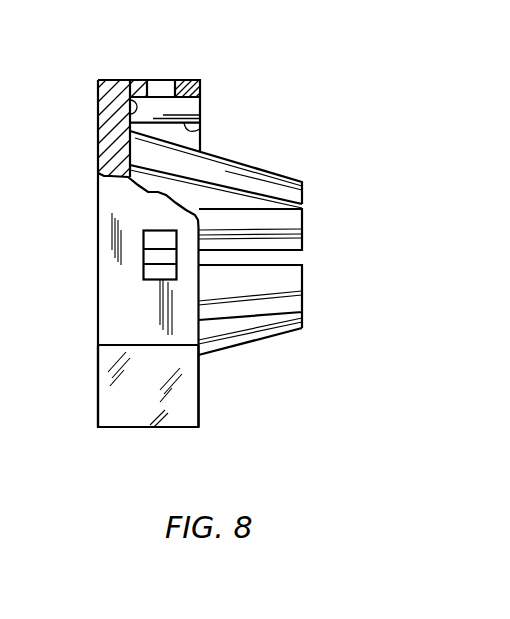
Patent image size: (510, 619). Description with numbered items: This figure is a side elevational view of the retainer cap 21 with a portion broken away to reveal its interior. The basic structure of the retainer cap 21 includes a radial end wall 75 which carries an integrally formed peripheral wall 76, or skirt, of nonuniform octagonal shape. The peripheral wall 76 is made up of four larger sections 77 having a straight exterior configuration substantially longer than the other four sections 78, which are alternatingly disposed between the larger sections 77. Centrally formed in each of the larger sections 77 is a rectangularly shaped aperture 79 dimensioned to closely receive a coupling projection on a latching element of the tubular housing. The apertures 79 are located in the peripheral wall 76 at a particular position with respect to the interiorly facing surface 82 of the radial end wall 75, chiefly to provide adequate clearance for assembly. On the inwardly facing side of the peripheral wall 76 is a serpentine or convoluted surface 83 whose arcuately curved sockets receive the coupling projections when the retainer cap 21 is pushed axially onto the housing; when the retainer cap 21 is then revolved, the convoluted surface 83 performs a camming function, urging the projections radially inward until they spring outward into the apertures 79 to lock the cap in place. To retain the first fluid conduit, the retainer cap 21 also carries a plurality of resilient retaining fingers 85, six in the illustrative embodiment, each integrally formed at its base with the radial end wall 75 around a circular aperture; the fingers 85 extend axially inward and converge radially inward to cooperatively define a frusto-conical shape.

The retainer cap 21 is at (116, 75).
The radial end wall 75 is at (98, 146).
The peripheral wall 76 is at (200, 82).
The larger section of the peripheral wall 77 is at (110, 323).
The smaller section of the peripheral wall 78 is at (117, 407).
The rectangular aperture 79 is at (174, 80).
The interiorly facing surface 82 is at (131, 104).
The convoluted interior wall surface 83 is at (200, 131).
The resilient retaining finger 85 is at (302, 195).